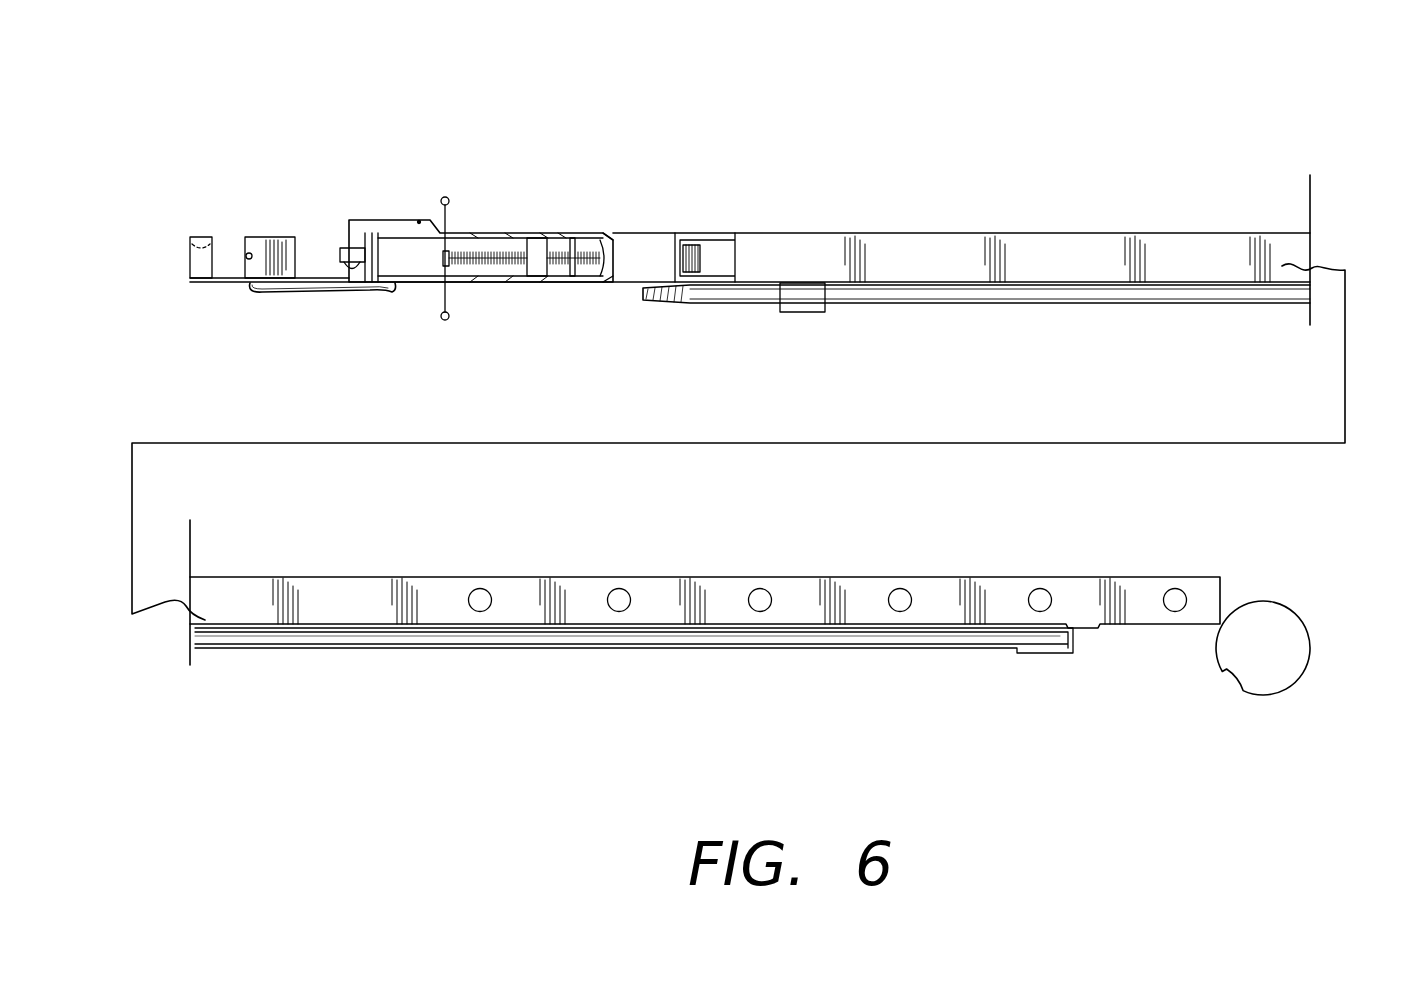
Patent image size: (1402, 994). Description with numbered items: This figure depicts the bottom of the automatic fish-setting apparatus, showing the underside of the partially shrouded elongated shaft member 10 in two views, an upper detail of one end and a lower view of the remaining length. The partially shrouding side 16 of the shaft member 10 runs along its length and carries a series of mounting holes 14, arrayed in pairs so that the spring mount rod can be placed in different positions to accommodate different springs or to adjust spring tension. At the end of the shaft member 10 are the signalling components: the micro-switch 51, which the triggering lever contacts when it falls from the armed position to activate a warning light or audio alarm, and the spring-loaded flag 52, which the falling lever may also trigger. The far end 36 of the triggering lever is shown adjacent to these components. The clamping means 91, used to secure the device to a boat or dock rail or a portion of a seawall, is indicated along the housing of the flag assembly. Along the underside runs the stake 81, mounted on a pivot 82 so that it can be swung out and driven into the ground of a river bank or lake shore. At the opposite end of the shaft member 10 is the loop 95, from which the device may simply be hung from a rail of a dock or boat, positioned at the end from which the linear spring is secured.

The partially shrouded elongated shaft member 10 is at (824, 172).
The mounting holes 14 is at (468, 600).
The partially shrouding side 16 is at (1167, 256).
The far end of the triggering lever 36 is at (322, 255).
The micro-switch 51 is at (246, 256).
The spring-loaded flag 52 is at (532, 228).
The stake 81 is at (1100, 296).
The pivot 82 is at (1040, 655).
The clamping means 91 is at (747, 330).
The loop 95 is at (1302, 612).